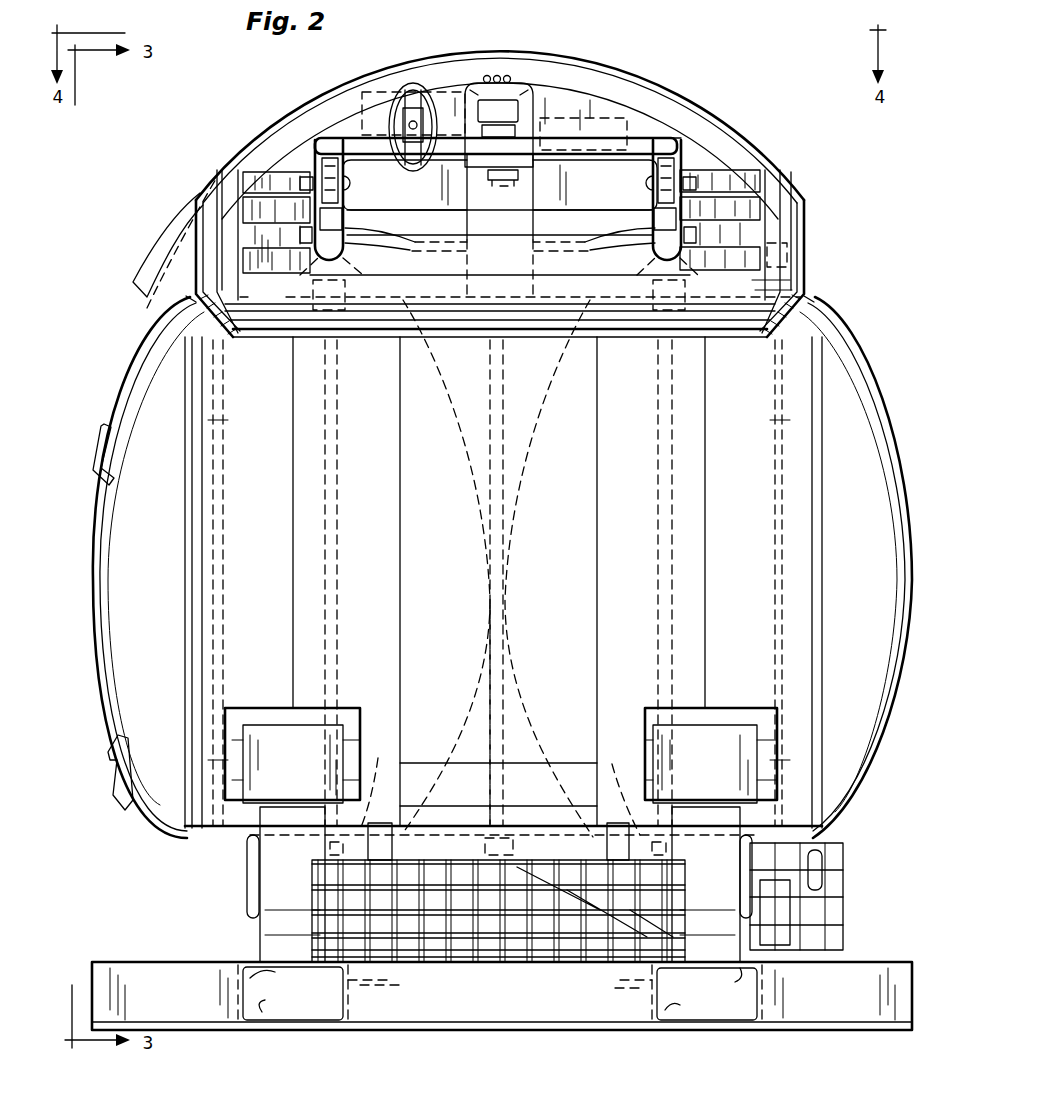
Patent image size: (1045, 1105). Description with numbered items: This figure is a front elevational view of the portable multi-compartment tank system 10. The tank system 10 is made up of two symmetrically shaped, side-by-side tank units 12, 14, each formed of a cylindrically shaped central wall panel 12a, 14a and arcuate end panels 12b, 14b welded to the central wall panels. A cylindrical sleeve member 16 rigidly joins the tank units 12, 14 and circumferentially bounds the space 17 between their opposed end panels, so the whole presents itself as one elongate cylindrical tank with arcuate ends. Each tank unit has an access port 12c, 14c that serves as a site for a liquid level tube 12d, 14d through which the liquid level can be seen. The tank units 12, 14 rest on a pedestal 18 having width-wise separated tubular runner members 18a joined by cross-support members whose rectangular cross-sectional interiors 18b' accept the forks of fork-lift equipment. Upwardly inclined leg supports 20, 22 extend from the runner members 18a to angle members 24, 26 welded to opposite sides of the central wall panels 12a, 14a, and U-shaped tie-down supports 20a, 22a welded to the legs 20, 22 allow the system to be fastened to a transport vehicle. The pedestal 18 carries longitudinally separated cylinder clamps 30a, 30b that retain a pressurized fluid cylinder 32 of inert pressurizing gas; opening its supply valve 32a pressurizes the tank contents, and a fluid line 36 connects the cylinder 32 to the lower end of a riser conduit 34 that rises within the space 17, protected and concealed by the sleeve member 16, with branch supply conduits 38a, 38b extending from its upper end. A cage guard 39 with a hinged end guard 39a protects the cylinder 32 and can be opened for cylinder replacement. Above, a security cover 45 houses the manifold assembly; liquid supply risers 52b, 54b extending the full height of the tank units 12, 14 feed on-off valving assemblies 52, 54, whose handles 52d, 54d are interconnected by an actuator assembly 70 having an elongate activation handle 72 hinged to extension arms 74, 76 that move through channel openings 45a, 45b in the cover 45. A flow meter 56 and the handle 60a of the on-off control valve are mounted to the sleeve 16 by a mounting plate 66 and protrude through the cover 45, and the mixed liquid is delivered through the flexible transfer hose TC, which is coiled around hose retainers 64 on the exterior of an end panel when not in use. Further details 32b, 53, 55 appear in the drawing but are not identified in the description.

The tank system 10 is at (716, 44).
The transfer hose TC is at (178, 250).
The tank unit 12 is at (138, 370).
The central wall panel 12a is at (242, 582).
The end panel 12b is at (163, 582).
The access port 12c is at (186, 297).
The liquid level tube 12d is at (220, 392).
The tank unit 14 is at (848, 336).
The central wall panel 14a is at (758, 582).
The end panel 14b is at (845, 582).
The access port 14c is at (806, 282).
The liquid level tube 14d is at (775, 413).
The sleeve member 16 is at (498, 581).
The space 17 is at (520, 733).
The pedestal 18 is at (220, 1010).
The runner member 18a is at (502, 995).
The rectangular cross-sectional interior 18b' is at (500, 995).
The leg support 20 is at (292, 884).
The tie-down support 20a is at (247, 862).
The leg support 22 is at (706, 884).
The tie-down support 22a is at (742, 863).
The angle member 24 is at (292, 755).
The angle member 26 is at (711, 755).
The cylinder clamp 30a is at (380, 822).
The cylinder clamp 30b is at (613, 825).
The pressurized fluid cylinder 32 is at (498, 901).
The supply valve 32a is at (820, 882).
The side grille panel 32b is at (793, 892).
The riser conduit 34 is at (497, 452).
The fluid line 36 is at (513, 848).
The branch supply conduit 38a is at (370, 228).
The branch supply conduit 38b is at (612, 228).
The cage guard 39 is at (458, 943).
The end guard 39a is at (830, 845).
The security cover 45 is at (520, 260).
The channel opening 45a is at (343, 182).
The channel opening 45b is at (652, 186).
The valving assembly 52 is at (336, 240).
The liquid supply riser 52b is at (333, 443).
The handle 52d is at (320, 183).
The left edge 53 is at (359, 795).
The valving assembly 54 is at (643, 247).
The liquid supply riser 54b is at (662, 440).
The handle 54d is at (682, 177).
The right edge 55 is at (633, 798).
The flow meter 56 is at (532, 80).
The handle 60a is at (414, 83).
The hose retainer 64 is at (108, 430).
The mounting plate 66 is at (500, 225).
The actuator assembly 70 is at (667, 133).
The activation handle 72 is at (567, 145).
The extension arm 74 is at (315, 145).
The extension arm 76 is at (688, 148).